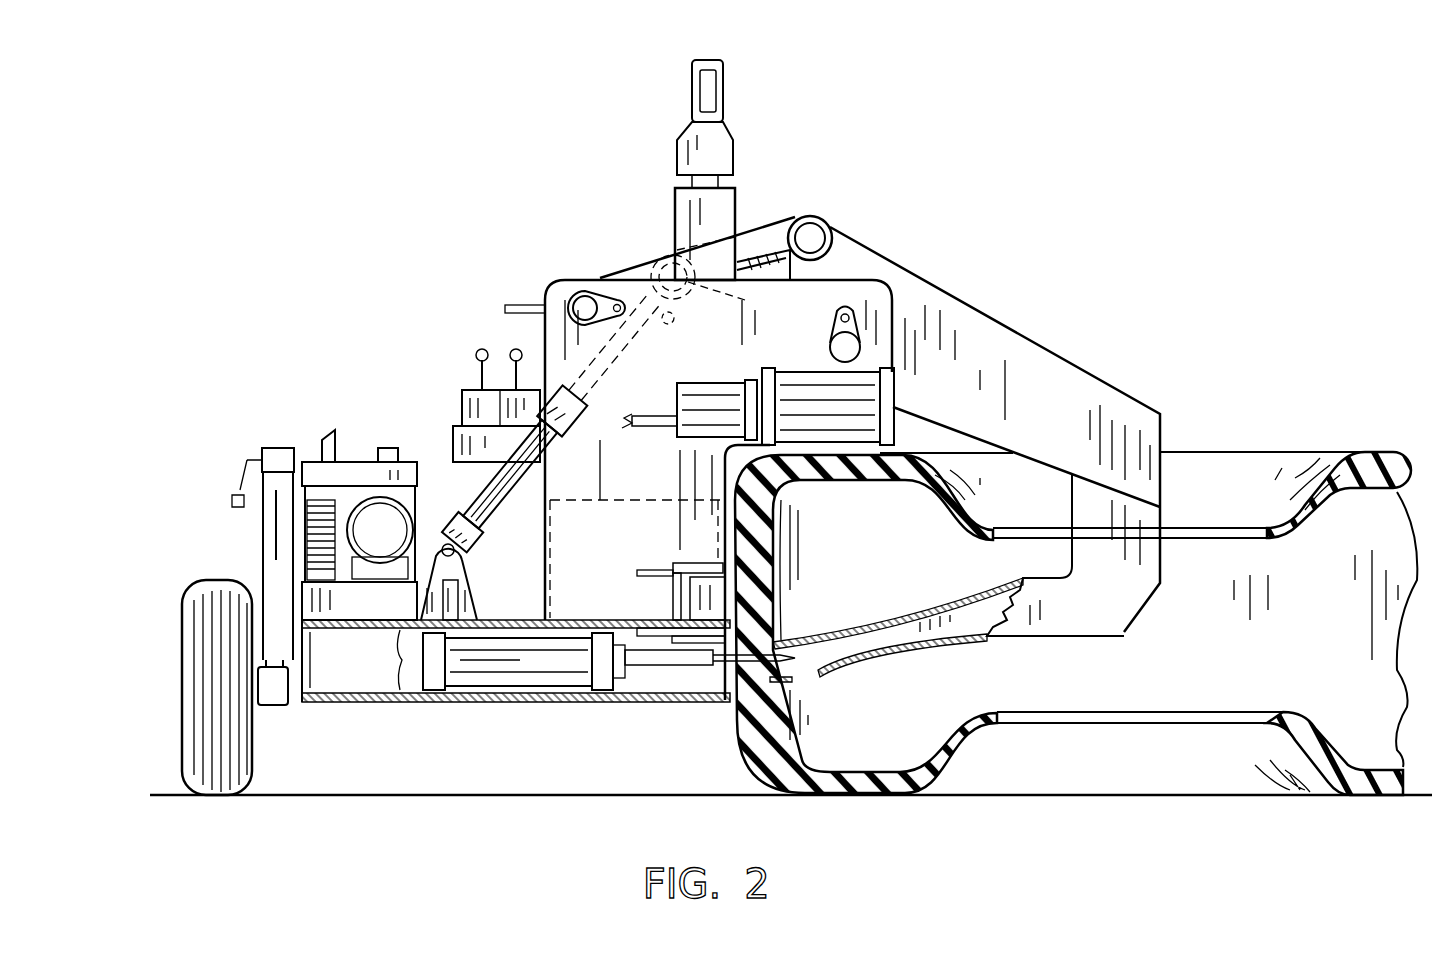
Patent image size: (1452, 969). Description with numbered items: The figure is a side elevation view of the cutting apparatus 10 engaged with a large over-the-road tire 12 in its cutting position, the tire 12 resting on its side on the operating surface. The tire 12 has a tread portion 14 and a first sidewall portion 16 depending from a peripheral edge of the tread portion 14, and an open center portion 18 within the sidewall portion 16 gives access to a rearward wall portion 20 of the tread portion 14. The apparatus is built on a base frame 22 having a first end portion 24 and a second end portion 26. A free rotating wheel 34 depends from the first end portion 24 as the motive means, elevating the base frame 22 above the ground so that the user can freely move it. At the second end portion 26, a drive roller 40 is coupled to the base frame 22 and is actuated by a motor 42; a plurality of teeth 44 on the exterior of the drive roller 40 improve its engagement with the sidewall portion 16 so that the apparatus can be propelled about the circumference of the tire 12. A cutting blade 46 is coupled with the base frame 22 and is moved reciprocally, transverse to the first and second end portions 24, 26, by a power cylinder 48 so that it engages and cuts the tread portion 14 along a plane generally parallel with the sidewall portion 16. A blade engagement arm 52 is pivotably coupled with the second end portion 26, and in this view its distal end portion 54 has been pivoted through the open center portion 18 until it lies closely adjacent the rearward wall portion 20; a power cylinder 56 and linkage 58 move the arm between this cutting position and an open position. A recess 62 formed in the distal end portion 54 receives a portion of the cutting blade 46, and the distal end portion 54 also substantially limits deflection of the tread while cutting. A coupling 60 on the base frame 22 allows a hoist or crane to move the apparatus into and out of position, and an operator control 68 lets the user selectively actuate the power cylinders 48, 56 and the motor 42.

The cutting apparatus 10 is at (376, 272).
The over-the-road tire 12 is at (1320, 412).
The tread portion 14 is at (755, 728).
The first sidewall portion 16 is at (852, 488).
The open center portion 18 is at (1189, 552).
The rearward wall portion 20 is at (790, 548).
The base frame 22 is at (517, 613).
The first end portion 24 is at (312, 670).
The second end portion 26 is at (710, 692).
The free rotating wheel 34 is at (203, 613).
The drive roller 40 is at (866, 400).
The motor 42 is at (710, 398).
The teeth 44 is at (808, 368).
The cutting blade 46 is at (770, 677).
The power cylinder 48 is at (503, 660).
The blade engagement arm 52 is at (1105, 620).
The distal end portion 54 is at (798, 622).
The power cylinder 56 is at (478, 500).
The linkage 58 is at (762, 237).
The coupling 60 is at (723, 93).
The recess 62 is at (733, 688).
The operator control 68 is at (494, 346).